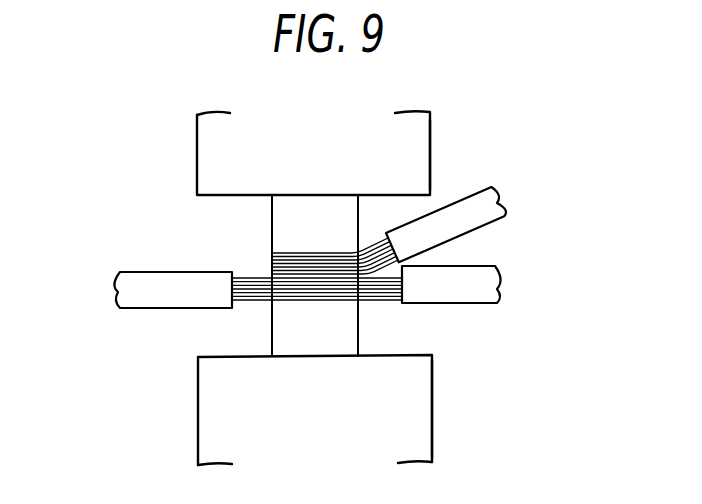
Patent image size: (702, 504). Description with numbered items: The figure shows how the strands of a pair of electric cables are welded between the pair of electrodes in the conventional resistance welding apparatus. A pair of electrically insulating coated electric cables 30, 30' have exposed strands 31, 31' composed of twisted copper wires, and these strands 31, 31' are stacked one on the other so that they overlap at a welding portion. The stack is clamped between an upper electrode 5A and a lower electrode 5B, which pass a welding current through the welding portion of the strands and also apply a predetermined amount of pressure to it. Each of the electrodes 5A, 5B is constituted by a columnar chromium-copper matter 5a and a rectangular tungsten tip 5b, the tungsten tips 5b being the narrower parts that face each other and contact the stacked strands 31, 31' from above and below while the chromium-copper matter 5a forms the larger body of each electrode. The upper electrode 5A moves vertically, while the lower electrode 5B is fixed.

The upper electrode 5A is at (184, 156).
The lower electrode 5B is at (185, 432).
The columnar chromium-copper matter 5a is at (432, 128).
The rectangular tungsten tip 5b is at (272, 216).
The electric cable 30 is at (307, 326).
The electric cable 30' is at (471, 191).
The strand 31 is at (353, 322).
The strand 31' is at (284, 248).